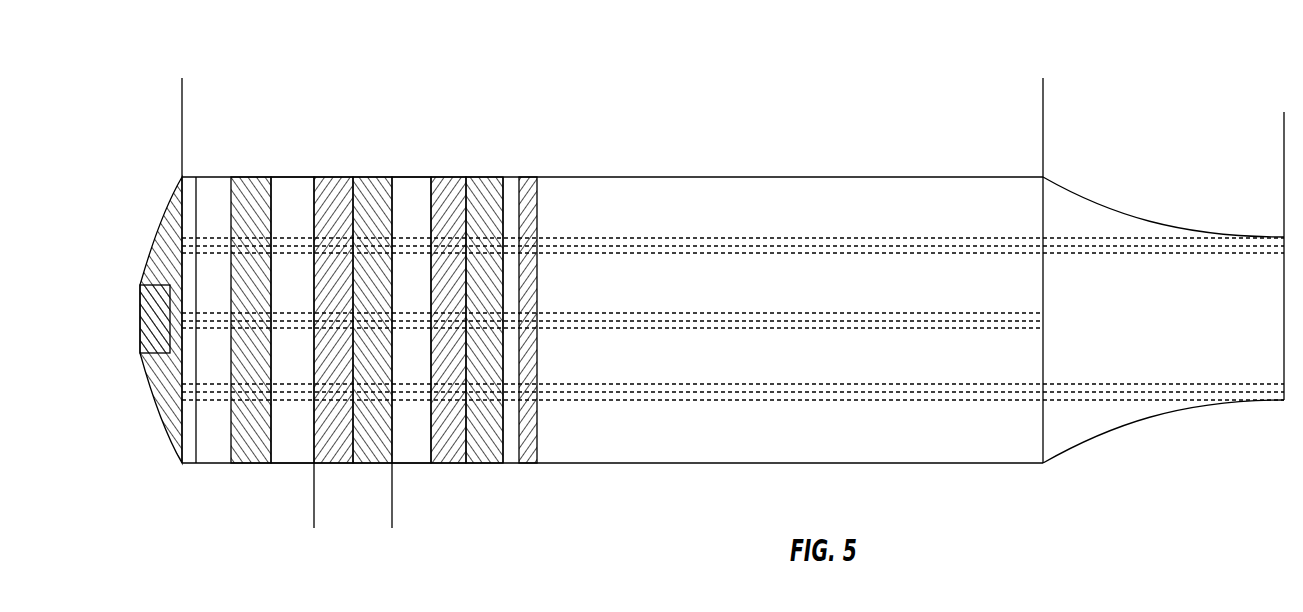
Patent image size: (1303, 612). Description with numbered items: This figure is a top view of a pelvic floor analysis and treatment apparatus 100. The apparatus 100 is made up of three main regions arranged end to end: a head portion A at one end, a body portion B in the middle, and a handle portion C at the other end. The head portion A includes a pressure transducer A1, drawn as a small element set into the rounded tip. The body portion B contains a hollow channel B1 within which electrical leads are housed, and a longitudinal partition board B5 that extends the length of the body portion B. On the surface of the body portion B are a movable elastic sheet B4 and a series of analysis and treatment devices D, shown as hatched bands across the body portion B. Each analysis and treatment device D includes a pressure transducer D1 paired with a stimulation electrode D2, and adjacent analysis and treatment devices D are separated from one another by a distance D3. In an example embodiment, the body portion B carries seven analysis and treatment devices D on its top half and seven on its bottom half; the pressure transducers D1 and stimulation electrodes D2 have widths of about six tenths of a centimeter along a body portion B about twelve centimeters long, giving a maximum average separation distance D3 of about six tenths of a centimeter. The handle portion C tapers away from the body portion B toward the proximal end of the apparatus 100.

The pelvic floor analysis and treatment apparatus 100 is at (258, 78).
The head portion A is at (158, 408).
The pressure transducer A1 is at (155, 320).
The body portion B is at (1043, 98).
The hollow channel B1 is at (771, 277).
The movable elastic sheet B4 is at (188, 463).
The longitudinal partition board B5 is at (890, 320).
The handle portion C is at (1284, 151).
The analysis and treatment device D is at (392, 510).
The pressure transducer D1 is at (447, 450).
The stimulation electrode D2 is at (484, 450).
The separation distance D3 is at (290, 452).